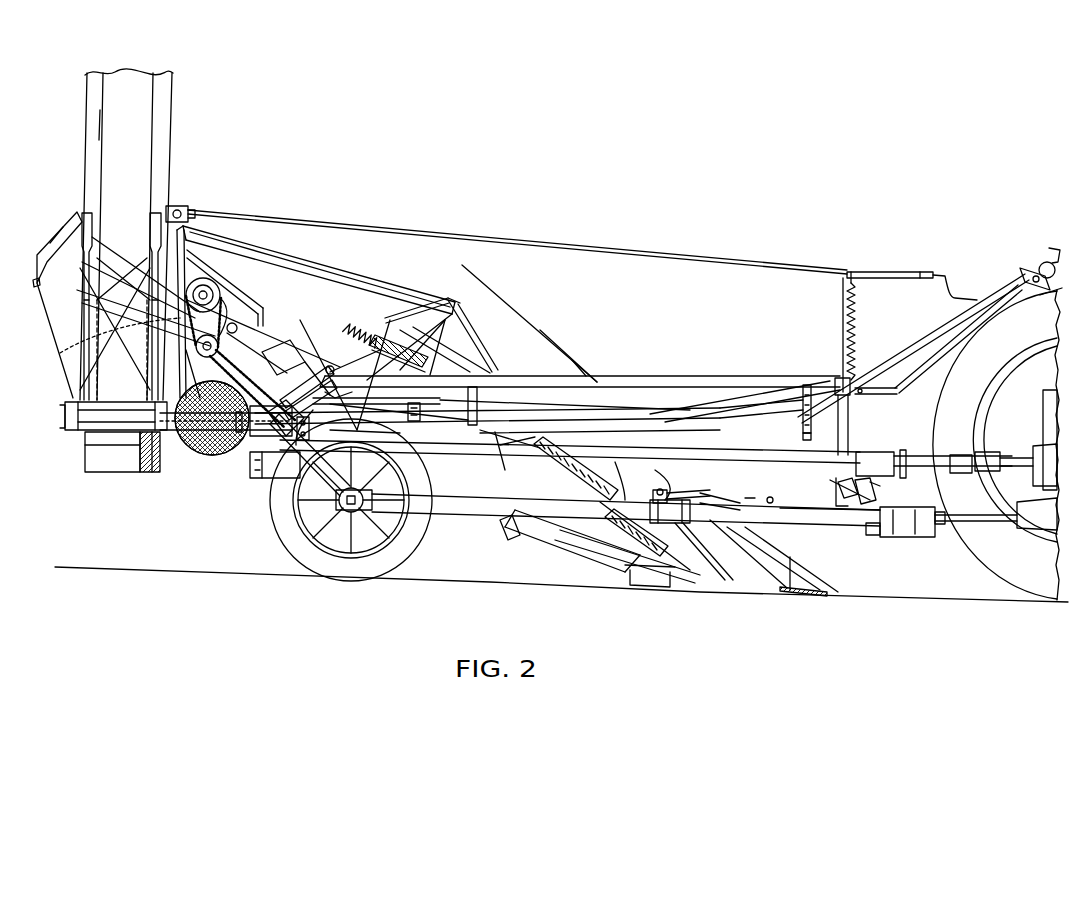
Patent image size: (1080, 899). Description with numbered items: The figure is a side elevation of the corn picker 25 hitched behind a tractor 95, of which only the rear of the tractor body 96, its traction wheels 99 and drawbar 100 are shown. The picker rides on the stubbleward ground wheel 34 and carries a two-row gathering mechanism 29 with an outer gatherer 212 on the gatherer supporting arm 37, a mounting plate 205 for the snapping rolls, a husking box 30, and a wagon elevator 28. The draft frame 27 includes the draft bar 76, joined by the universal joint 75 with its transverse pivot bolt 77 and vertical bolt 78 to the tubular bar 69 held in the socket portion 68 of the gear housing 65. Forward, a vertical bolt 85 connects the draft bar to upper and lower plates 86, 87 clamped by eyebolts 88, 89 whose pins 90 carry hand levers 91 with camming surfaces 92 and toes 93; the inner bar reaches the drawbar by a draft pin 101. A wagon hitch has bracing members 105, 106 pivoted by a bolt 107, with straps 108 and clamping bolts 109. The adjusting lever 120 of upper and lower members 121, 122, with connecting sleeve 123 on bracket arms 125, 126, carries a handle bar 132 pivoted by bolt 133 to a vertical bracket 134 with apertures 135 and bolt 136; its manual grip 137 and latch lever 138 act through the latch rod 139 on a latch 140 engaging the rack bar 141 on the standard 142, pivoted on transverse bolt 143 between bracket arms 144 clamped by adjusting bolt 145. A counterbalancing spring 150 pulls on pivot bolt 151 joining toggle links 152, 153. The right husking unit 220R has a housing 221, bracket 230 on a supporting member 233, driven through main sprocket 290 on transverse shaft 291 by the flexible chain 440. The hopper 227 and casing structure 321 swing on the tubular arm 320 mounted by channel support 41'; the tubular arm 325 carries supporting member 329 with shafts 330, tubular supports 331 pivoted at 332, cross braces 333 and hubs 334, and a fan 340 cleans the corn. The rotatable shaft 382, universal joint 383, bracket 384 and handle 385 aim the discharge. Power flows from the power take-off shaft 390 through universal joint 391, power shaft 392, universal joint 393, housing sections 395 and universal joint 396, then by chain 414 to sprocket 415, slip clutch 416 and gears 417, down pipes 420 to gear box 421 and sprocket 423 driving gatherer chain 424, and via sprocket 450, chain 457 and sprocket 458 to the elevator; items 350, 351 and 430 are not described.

The corn picker 25 is at (546, 312).
The draft frame 27 is at (793, 524).
The wagon elevator 28 is at (180, 139).
The gathering mechanism 29 is at (559, 355).
The husking box 30 is at (324, 242).
The ground engaging wheel 34 is at (376, 566).
The gatherer supporting arm 37 is at (553, 536).
The channel-shaped support 41' is at (279, 471).
The gear housing 65 is at (258, 456).
The socket portion 68 is at (265, 464).
The tubular bar 69 is at (273, 460).
The universal joint 75 is at (367, 515).
The draft bar 76 is at (473, 516).
The transverse pivot bolt 77 is at (351, 527).
The vertical bolt 78 is at (391, 481).
The vertical bolt 85 is at (673, 519).
The upper plate 86 is at (721, 497).
The lower plate 87 is at (711, 537).
The eyebolts 88 is at (642, 489).
The eyebolts 89 is at (749, 521).
The pin 90 is at (661, 489).
The hand lever 91 is at (696, 496).
The camming surface 92 is at (746, 534).
The toe 93 is at (661, 465).
The tractor 95 is at (1041, 421).
The tractor body 96 is at (1051, 391).
The traction wheels 99 is at (1006, 562).
The drawbar 100 is at (983, 518).
The draft pin 101 is at (939, 524).
The bracing member 105 is at (901, 532).
The bracing member 106 is at (591, 540).
The bolt 107 is at (874, 534).
The straps 108 is at (626, 468).
The clamping bolts 109 is at (577, 530).
The adjusting lever 120 is at (728, 377).
The upper member 121 is at (657, 378).
The lower member 122 is at (733, 402).
The connecting sleeve 123 is at (333, 380).
The bracket arm 125 is at (313, 358).
The bracket arm 126 is at (319, 358).
The handle bar 132 is at (897, 357).
The bolt 133 is at (838, 380).
The vertical bracket 134 is at (803, 389).
The apertures 135 is at (800, 414).
The bolt 136 is at (809, 426).
The manual grip 137 is at (1026, 267).
The latch lever 138 is at (1052, 262).
The latch rod 139 is at (916, 368).
The latch 140 is at (860, 394).
The rack bar 141 is at (855, 317).
The standard 142 is at (850, 438).
The transverse bolt 143 is at (837, 501).
The bracket arms 144 is at (871, 489).
The adjusting bolt 145 is at (841, 489).
The counterbalancing spring 150 is at (424, 409).
The pivot bolt 151 is at (426, 404).
The toggle link 152 is at (395, 434).
The toggle link 153 is at (470, 410).
The mounting plate 205 is at (463, 330).
The outer gatherer 212 is at (576, 370).
The right-hand combined conveyor and husking unit 220R is at (262, 302).
The housing 221 is at (283, 318).
The corn-receiving hopper 227 is at (57, 316).
The bracket 230 is at (92, 291).
The supporting member 233 is at (182, 398).
The main sprocket 290 is at (146, 268).
The transverse shaft 291 is at (145, 258).
The tubular arm 320 is at (168, 478).
The casing structure 321 is at (104, 122).
The tubular arm 325 is at (158, 444).
The supporting member 329 is at (78, 426).
The shafts 330 is at (72, 350).
The tubular supports 331 is at (157, 278).
The pivot 332 is at (130, 226).
The cross braces 333 is at (115, 329).
The hubs 334 is at (150, 406).
The fan 340 is at (122, 350).
The brace 350 is at (92, 303).
The roller 351 is at (197, 455).
The manually rotatable shaft 382 is at (450, 236).
The universal joint 383 is at (176, 208).
The bracket 384 is at (878, 272).
The handle 385 is at (951, 294).
The power take-off shaft 390 is at (1031, 462).
The universal joint 391 is at (979, 456).
The power shaft 392 is at (959, 464).
The universal joint 393 is at (899, 448).
The telescoping housing sections 395 is at (656, 421).
The universal joint 396 is at (336, 433).
The power transmission chain 414 is at (570, 442).
The sprocket 415 is at (396, 350).
The slip clutch mechanism 416 is at (362, 322).
The gears 417 is at (411, 343).
The pipes 420 is at (468, 345).
The gear box 421 is at (549, 462).
The sprocket 423 is at (598, 457).
The gatherer chain 424 is at (643, 572).
The rod 430 is at (459, 327).
The flexible chain 440 is at (236, 287).
The sprocket 450 is at (232, 470).
The chain 457 is at (136, 452).
The sprocket 458 is at (144, 470).